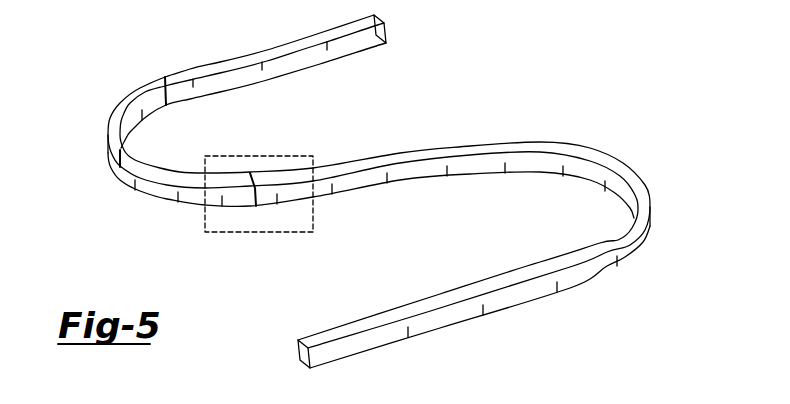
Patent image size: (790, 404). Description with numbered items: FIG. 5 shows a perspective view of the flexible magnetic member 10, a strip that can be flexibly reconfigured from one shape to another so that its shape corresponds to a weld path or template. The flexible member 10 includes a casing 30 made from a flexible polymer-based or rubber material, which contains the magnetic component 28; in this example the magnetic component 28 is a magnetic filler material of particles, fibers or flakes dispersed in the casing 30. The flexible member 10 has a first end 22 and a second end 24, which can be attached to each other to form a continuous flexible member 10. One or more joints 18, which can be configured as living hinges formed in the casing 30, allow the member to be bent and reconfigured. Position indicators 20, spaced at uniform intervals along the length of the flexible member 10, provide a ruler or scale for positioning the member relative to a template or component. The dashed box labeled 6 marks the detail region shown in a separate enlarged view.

The detail region shown in FIG. 6 is at (259, 177).
The flexible magnetic member 10 is at (360, 190).
The joint 18 is at (165, 78).
The position indicator 20 is at (263, 76).
The first end 22 is at (386, 31).
The second end 24 is at (298, 352).
The magnetic component 28 is at (352, 48).
The casing 30 is at (620, 164).